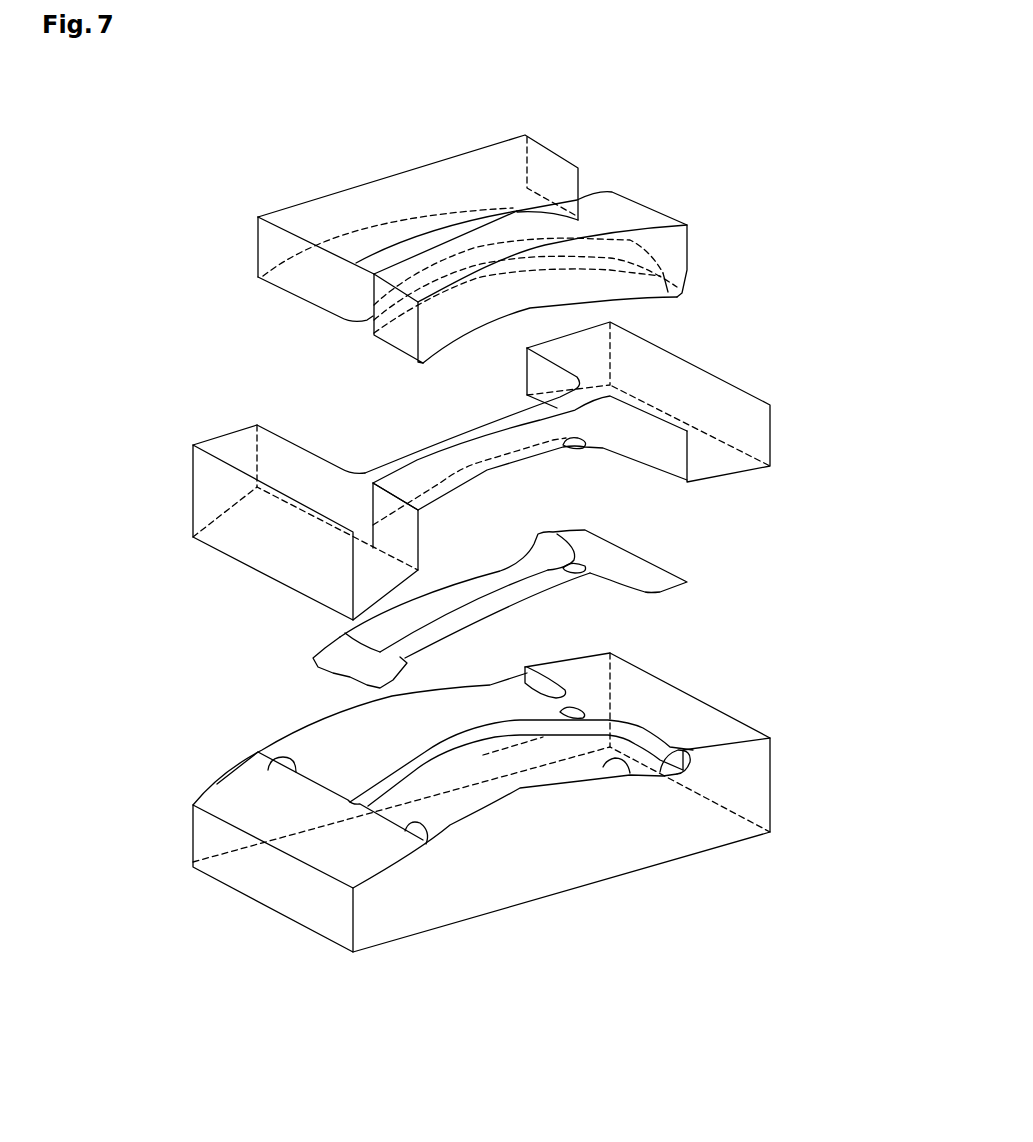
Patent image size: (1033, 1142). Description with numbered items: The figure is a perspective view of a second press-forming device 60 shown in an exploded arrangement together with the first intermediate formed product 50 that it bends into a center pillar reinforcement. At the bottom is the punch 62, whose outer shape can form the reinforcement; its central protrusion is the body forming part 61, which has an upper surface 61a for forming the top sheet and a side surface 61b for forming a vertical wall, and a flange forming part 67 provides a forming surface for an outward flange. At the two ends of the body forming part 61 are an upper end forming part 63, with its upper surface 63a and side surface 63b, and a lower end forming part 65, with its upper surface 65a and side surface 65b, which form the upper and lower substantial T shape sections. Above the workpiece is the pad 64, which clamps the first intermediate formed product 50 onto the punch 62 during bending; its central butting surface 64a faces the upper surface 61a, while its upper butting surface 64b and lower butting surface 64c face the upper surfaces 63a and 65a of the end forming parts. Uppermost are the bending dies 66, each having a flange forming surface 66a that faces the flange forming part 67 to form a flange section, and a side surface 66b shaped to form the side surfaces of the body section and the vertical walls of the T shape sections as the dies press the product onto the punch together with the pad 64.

The second press-forming device 60 is at (713, 123).
The bending dies 66 is at (633, 171).
The flange forming surface 66a is at (317, 290).
The side surface 66b is at (514, 210).
The pad 64 is at (757, 353).
The central butting surface 64a is at (487, 469).
The upper butting surface 64b is at (260, 577).
The lower butting surface 64c is at (712, 477).
The first intermediate formed product 50 is at (603, 557).
The punch 62 is at (693, 937).
The upper end forming part 63 is at (262, 731).
The upper surface 63a is at (260, 825).
The side surface 63b is at (217, 784).
The lower end forming part 65 is at (695, 658).
The upper surface 65a is at (687, 713).
The side surface 65b is at (524, 681).
The body forming part 61 is at (477, 718).
The upper surface 61a is at (453, 748).
The side surface 61b is at (527, 740).
The flange forming part 67 is at (630, 773).